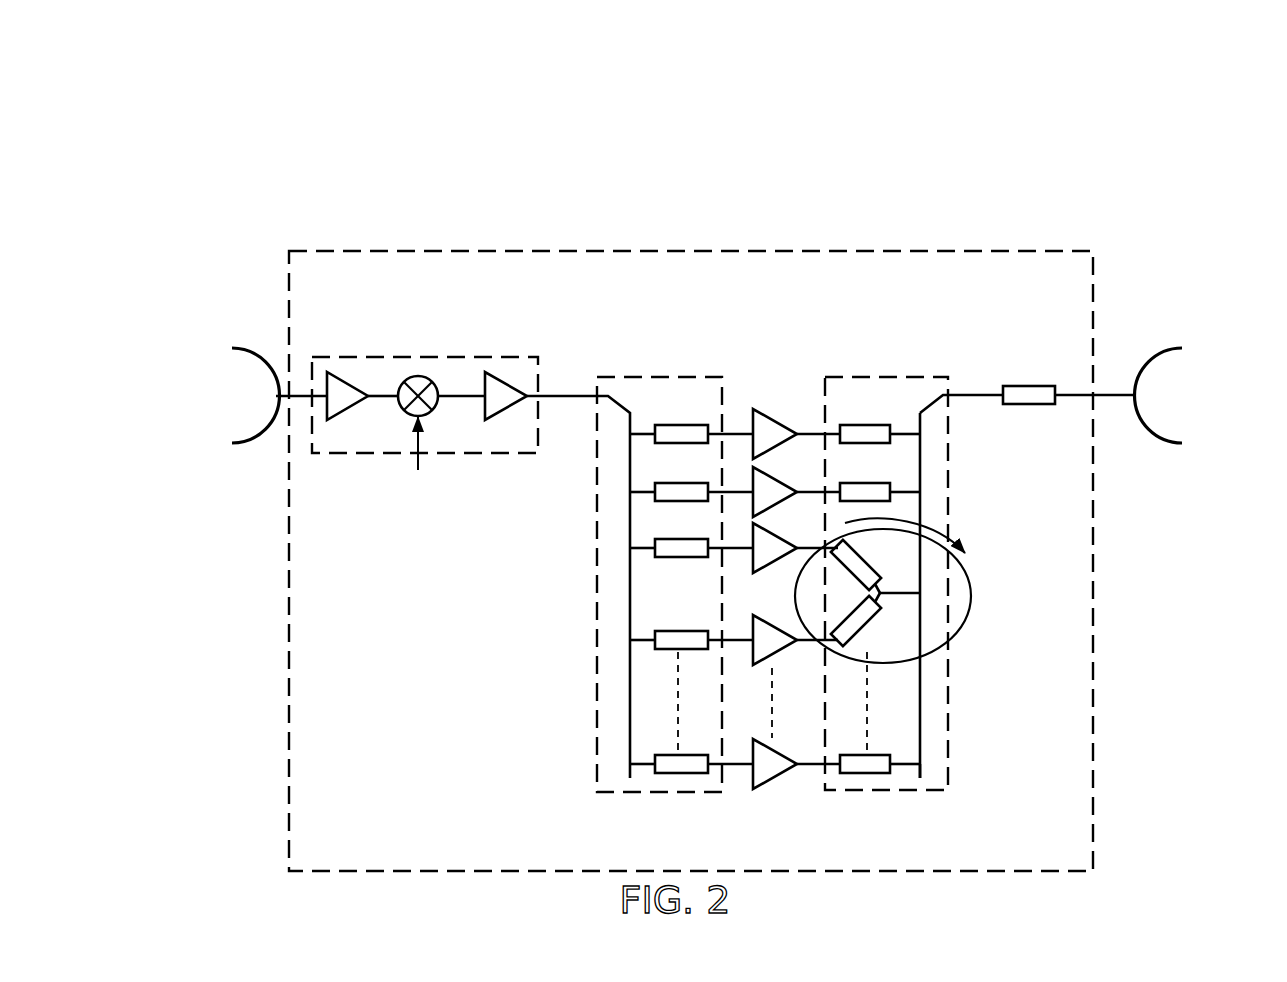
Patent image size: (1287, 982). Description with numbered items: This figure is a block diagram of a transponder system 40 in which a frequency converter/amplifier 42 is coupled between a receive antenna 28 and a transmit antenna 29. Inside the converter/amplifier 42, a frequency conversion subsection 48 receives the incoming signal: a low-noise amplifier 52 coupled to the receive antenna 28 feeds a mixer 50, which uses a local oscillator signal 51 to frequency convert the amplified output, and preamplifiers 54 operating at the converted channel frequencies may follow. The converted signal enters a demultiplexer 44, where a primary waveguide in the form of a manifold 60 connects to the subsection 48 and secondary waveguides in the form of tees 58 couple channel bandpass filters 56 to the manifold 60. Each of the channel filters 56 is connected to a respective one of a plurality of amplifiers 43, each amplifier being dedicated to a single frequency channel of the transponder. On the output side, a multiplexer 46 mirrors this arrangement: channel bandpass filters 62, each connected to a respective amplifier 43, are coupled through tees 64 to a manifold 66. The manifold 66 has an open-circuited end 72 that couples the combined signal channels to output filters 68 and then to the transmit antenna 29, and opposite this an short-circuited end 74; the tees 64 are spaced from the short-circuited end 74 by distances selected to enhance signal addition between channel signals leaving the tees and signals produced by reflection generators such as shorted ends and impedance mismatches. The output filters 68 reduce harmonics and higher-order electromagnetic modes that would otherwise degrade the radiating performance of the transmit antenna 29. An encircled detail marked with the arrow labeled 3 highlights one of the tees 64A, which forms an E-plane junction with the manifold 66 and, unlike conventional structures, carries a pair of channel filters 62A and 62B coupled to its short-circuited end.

The transponder system 40 is at (640, 223).
The frequency converter/amplifier 42 is at (1095, 590).
The receive antenna 28 is at (247, 348).
The transmit antenna 29 is at (1160, 348).
The frequency conversion subsection 48 is at (362, 456).
The low-noise amplifier 52 is at (345, 378).
The mixer 50 is at (430, 374).
The local oscillator signal 51 is at (418, 462).
The preamplifiers 54 is at (503, 378).
The demultiplexer 44 is at (593, 682).
The manifold 60 is at (627, 730).
The tees 58 is at (643, 770).
The channel bandpass filters 56 is at (670, 773).
The amplifiers 43 is at (770, 782).
The multiplexer 46 is at (950, 680).
The channel bandpass filters 62 is at (858, 773).
The channel filter 62A is at (867, 566).
The channel filter 62B is at (870, 620).
The tees 64 is at (907, 766).
The tee 64A is at (907, 594).
The manifold 66 is at (920, 718).
The short-circuited end 74 is at (920, 775).
The open-circuited end 72 is at (958, 390).
The output filters 68 is at (1038, 384).
The section view FIG. 3 indicator 3 is at (978, 608).